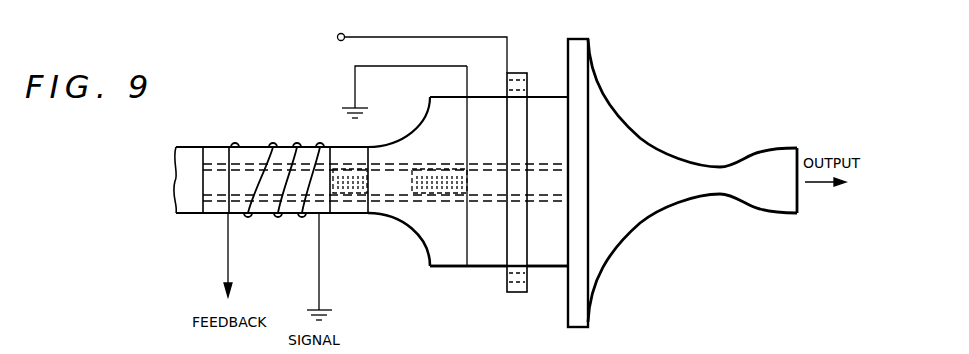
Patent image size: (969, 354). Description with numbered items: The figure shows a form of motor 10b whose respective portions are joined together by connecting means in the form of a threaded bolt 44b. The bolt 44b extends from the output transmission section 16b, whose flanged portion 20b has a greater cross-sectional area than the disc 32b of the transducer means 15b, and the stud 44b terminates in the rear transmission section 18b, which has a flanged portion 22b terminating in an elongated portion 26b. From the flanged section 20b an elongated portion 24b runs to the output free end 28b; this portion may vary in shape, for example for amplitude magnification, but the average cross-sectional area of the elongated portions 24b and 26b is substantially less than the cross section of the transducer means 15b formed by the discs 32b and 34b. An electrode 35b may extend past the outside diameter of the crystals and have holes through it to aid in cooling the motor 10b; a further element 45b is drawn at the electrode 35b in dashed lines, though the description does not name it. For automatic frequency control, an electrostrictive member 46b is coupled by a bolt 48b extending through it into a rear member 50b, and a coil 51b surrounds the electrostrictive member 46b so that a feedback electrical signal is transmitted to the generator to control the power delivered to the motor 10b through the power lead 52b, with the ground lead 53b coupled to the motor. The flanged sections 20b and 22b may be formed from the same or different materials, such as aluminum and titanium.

The motor 10b is at (716, 180).
The transducer means 15b is at (546, 98).
The output transmission section 16b is at (638, 139).
The rear transmission section 18b is at (443, 267).
The flanged portion 20b is at (577, 39).
The flanged portion 22b is at (430, 266).
The elongated portion 24b is at (742, 162).
The elongated portion 26b is at (410, 133).
The output free end 28b is at (797, 200).
The disc 32b is at (554, 267).
The disc 34b is at (487, 255).
The electrode 35b is at (515, 292).
The threaded bolt 44b is at (430, 200).
The bolt 45b is at (511, 90).
The electrostrictive member 46b is at (214, 150).
The bolt 48b is at (363, 197).
The rear member 50b is at (185, 213).
The coil 51b is at (276, 147).
The power lead 52b is at (380, 36).
The ground lead 53b is at (355, 80).